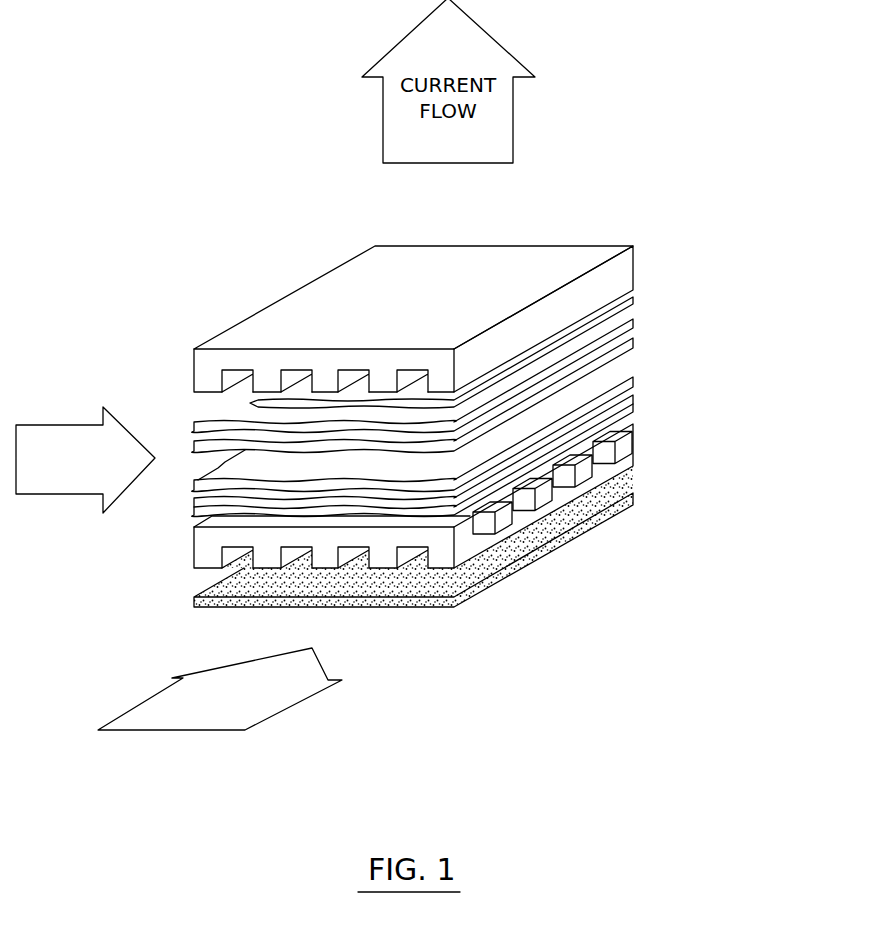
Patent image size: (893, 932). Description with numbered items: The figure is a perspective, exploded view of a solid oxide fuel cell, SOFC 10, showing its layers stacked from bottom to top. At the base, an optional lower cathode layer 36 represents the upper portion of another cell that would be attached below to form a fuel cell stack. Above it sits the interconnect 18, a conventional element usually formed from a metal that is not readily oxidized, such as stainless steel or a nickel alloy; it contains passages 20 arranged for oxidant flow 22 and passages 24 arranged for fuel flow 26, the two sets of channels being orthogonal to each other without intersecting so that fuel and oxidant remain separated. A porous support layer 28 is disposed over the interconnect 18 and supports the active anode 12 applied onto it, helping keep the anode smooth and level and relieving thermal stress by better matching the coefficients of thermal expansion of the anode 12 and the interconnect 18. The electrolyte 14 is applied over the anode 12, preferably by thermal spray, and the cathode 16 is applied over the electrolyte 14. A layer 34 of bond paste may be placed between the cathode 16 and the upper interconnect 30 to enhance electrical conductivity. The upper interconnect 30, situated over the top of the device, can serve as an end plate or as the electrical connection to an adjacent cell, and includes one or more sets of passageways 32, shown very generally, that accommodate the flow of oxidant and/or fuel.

The SOFC 10 is at (730, 241).
The upper interconnect 30 is at (354, 274).
The passageways 32 is at (233, 393).
The layer of bond paste 34 is at (634, 306).
The cathode 16 is at (634, 326).
The electrolyte 14 is at (634, 346).
The anode 12 is at (632, 384).
The porous support layer 28 is at (632, 404).
The passages 24 is at (628, 440).
The interconnect 18 is at (439, 535).
The passages 20 is at (246, 557).
The lower cathode layer 36 is at (518, 570).
The fuel flow 26 is at (52, 487).
The oxidant flow 22 is at (262, 705).